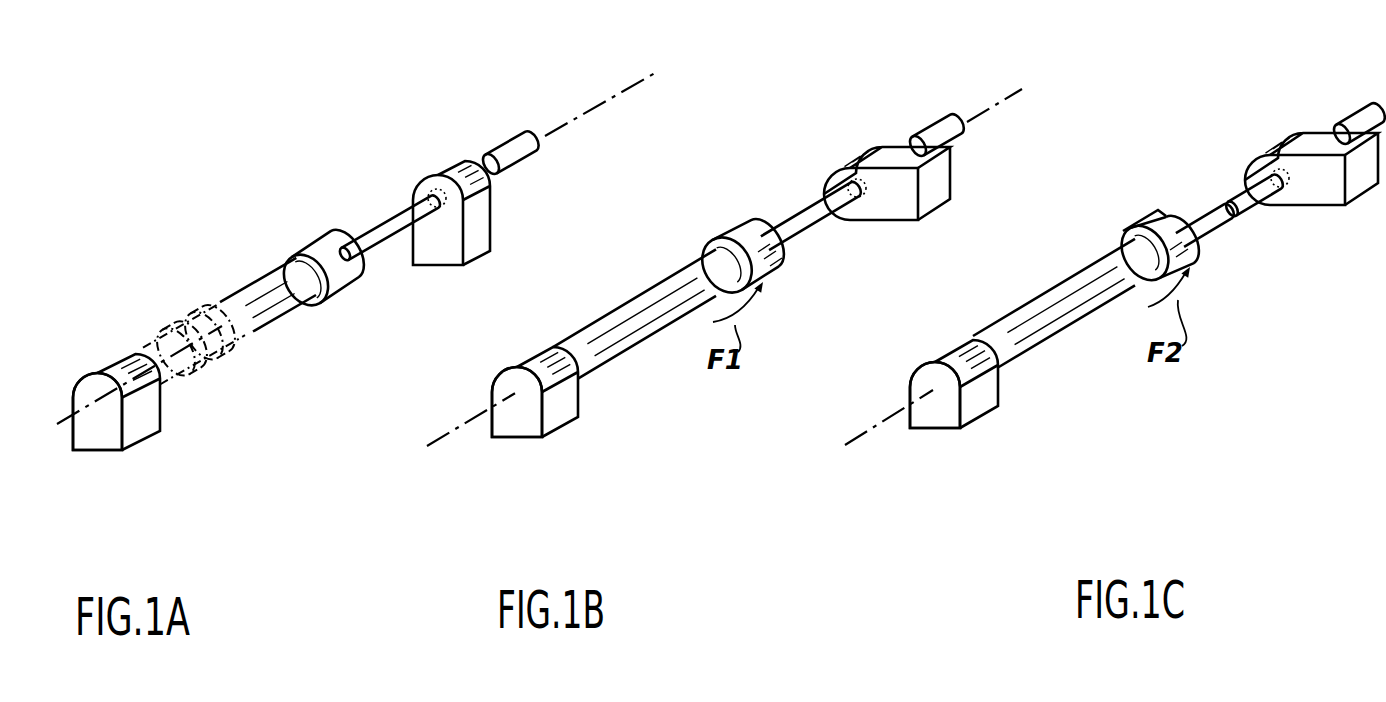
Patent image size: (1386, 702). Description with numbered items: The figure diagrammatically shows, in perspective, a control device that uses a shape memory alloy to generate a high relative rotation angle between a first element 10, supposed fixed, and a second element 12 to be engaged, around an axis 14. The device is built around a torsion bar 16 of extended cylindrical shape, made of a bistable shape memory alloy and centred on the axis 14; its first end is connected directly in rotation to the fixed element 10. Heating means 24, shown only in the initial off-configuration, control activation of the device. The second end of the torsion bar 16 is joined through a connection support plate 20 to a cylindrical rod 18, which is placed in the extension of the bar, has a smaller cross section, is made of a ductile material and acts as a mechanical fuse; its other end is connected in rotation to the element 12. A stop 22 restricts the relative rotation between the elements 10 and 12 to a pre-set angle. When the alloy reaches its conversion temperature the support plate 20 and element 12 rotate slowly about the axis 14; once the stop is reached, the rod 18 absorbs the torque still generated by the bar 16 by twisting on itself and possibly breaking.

In FIG. 1A, the first element 10 is at (140, 430).
In FIG. 1B, the first element 10 is at (553, 425).
In FIG. 1C, the first element 10 is at (968, 417).
In FIG. 1A, the second element 12 is at (477, 207).
In FIG. 1B, the second element 12 is at (897, 152).
In FIG. 1C, the second element 12 is at (1310, 168).
In FIG. 1A, the axis 14 is at (85, 408).
In FIG. 1B, the axis 14 is at (455, 445).
In FIG. 1C, the axis 14 is at (868, 432).
In FIG. 1A, the torsion bar 16 is at (288, 284).
In FIG. 1B, the torsion bar 16 is at (608, 335).
In FIG. 1C, the torsion bar 16 is at (1027, 333).
In FIG. 1A, the cylindrical rod 18 is at (400, 214).
In FIG. 1B, the cylindrical rod 18 is at (837, 213).
In FIG. 1C, the cylindrical rod 18 is at (1223, 215).
In FIG. 1A, the connection support plate 20 is at (323, 236).
In FIG. 1B, the connection support plate 20 is at (782, 266).
In FIG. 1C, the connection support plate 20 is at (1195, 243).
In FIG. 1A, the stop 22 is at (512, 142).
In FIG. 1B, the stop 22 is at (960, 128).
In FIG. 1C, the stop 22 is at (1353, 123).
In FIG. 1A, the heating means 24 is at (168, 318).